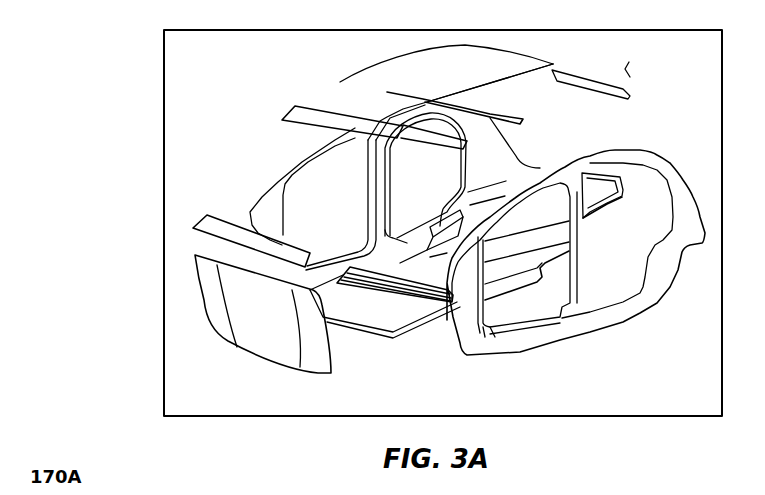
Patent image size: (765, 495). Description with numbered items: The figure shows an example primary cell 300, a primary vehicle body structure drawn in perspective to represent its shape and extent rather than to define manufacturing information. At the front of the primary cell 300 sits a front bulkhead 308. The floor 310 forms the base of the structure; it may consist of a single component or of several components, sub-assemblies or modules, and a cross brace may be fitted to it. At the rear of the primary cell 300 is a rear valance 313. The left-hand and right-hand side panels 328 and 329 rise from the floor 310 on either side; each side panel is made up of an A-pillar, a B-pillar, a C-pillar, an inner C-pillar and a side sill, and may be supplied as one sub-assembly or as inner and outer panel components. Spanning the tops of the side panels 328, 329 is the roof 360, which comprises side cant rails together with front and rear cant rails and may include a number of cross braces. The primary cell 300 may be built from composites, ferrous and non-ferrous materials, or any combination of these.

The primary cell 300 is at (188, 89).
The front bulkhead 308 is at (224, 320).
The floor 310 is at (411, 333).
The rear valance 313 is at (566, 110).
The side panel 328 is at (628, 332).
The side panel 329 is at (254, 198).
The roof 360 is at (380, 91).